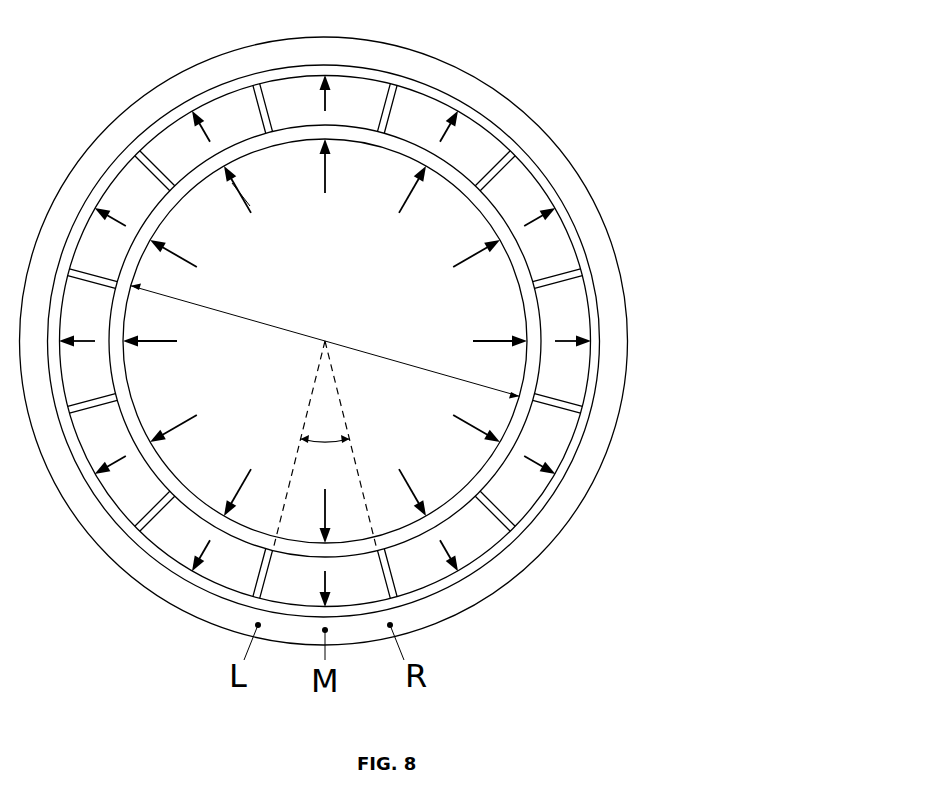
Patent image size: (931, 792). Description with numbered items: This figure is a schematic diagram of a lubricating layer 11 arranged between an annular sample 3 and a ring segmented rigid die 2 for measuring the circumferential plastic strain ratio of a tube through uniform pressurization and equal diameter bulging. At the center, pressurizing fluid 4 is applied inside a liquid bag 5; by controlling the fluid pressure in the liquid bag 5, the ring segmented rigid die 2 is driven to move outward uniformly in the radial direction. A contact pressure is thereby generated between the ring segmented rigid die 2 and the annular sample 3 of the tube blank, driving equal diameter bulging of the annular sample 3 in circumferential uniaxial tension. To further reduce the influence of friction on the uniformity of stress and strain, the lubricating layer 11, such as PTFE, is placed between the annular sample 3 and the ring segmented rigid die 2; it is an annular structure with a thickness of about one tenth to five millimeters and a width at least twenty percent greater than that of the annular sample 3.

The ring segmented rigid die 2 is at (527, 232).
The annular sample 3 is at (610, 337).
The pressurizing fluid 4 is at (409, 410).
The liquid bag 5 is at (475, 488).
The lubricating layer 11 is at (503, 549).